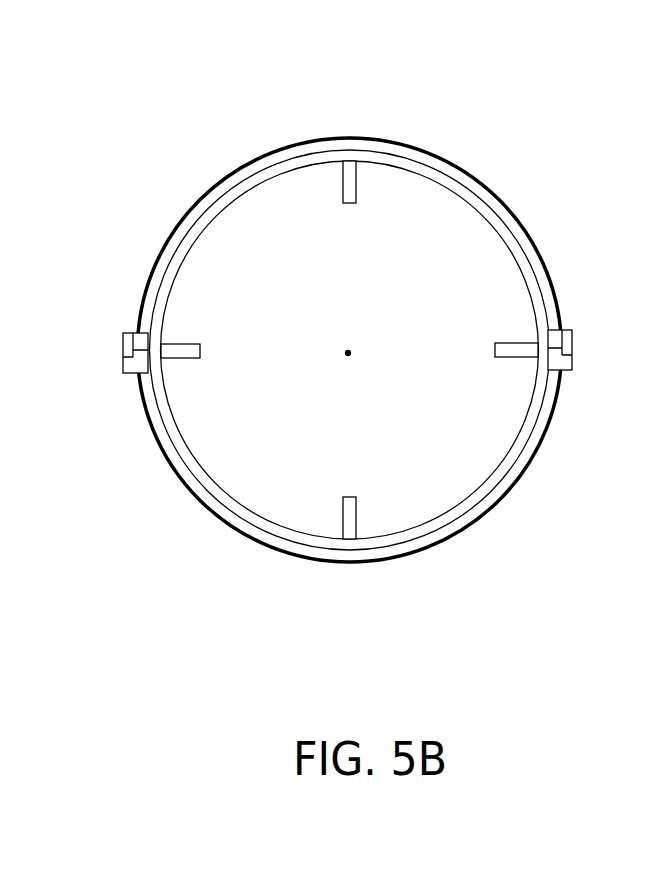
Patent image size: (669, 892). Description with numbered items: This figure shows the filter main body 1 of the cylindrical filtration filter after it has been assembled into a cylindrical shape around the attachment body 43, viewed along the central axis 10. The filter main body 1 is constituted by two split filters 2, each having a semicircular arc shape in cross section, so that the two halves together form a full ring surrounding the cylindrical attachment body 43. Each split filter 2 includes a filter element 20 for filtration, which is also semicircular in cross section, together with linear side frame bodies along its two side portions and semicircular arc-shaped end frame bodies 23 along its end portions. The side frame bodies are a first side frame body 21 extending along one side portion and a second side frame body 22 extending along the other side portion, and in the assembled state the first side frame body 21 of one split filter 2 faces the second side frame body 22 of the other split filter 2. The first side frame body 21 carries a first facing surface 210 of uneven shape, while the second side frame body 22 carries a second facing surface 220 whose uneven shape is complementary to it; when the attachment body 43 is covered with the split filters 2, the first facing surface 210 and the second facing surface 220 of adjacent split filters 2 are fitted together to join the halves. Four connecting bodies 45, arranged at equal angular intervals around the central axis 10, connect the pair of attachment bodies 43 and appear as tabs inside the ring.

The filter main body 1 is at (533, 121).
The split filter 2 is at (533, 204).
The central axis 10 is at (348, 353).
The filter element 20 is at (420, 145).
The first side frame body 21 is at (128, 342).
The second side frame body 22 is at (130, 365).
The end frame body 23 is at (200, 210).
The attachment body 43 is at (163, 297).
The connecting body 45 is at (343, 192).
The first facing surface 210 is at (128, 337).
The second facing surface 220 is at (133, 367).